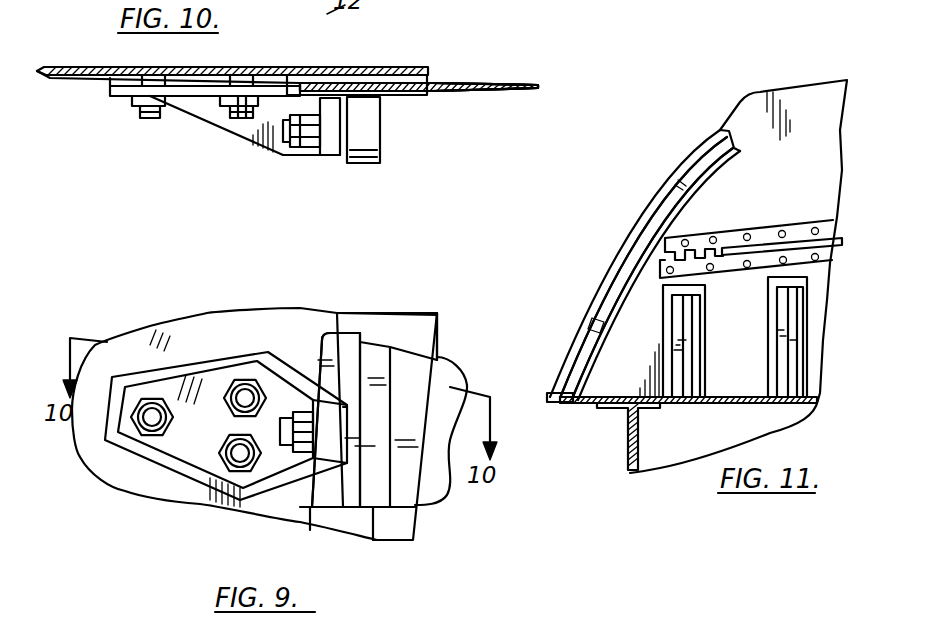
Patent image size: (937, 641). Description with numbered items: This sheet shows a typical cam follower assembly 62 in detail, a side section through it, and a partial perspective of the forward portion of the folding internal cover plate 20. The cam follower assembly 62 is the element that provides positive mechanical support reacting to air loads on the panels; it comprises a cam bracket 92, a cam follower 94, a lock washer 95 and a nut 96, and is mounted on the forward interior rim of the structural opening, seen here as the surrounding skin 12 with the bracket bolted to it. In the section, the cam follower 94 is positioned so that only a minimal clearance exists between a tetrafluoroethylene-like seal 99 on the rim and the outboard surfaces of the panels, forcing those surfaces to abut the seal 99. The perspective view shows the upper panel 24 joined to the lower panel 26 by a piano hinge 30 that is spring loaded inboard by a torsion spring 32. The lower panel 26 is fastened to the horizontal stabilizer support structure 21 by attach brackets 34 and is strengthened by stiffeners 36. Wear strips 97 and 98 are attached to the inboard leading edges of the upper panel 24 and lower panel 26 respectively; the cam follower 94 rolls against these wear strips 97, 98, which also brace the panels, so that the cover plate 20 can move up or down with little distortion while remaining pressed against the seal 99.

In FIG. 10, the skin / cover plate 12 is at (52, 67).
In FIG. 9, the skin / cover plate 12 is at (128, 330).
In FIG. 11, the folding internal cover plate 20 is at (686, 143).
In FIG. 11, the horizontal stabilizer support structure 21 is at (629, 448).
In FIG. 10, the upper panel 24 is at (528, 96).
In FIG. 9, the upper panel 24 is at (447, 368).
In FIG. 11, the upper panel 24 is at (800, 88).
In FIG. 10, the lower panel 26 is at (528, 96).
In FIG. 9, the lower panel 26 is at (447, 368).
In FIG. 11, the lower panel 26 is at (812, 345).
In FIG. 11, the piano hinge 30 is at (770, 215).
In FIG. 11, the torsion spring 32 is at (838, 247).
In FIG. 11, the attach brackets 34 is at (773, 342).
In FIG. 11, the stiffeners 36 is at (767, 286).
In FIG. 10, the cam follower assembly 62 is at (258, 148).
In FIG. 9, the cam follower assembly 62 is at (213, 345).
In FIG. 10, the cam bracket 92 is at (202, 115).
In FIG. 9, the cam bracket 92 is at (200, 470).
In FIG. 10, the cam follower 94 is at (368, 164).
In FIG. 9, the cam follower 94 is at (373, 463).
In FIG. 10, the lock washer 95 is at (312, 160).
In FIG. 9, the lock washer 95 is at (282, 488).
In FIG. 10, the nut 96 is at (286, 159).
In FIG. 9, the nut 96 is at (298, 400).
In FIG. 10, the wear strip 97 is at (408, 96).
In FIG. 9, the wear strip 97 is at (373, 335).
In FIG. 11, the wear strip 97 is at (677, 190).
In FIG. 10, the wear strip 98 is at (408, 96).
In FIG. 9, the wear strip 98 is at (373, 335).
In FIG. 11, the wear strip 98 is at (597, 316).
In FIG. 10, the TFE-like seal 99 is at (404, 67).
In FIG. 9, the TFE-like seal 99 is at (416, 524).